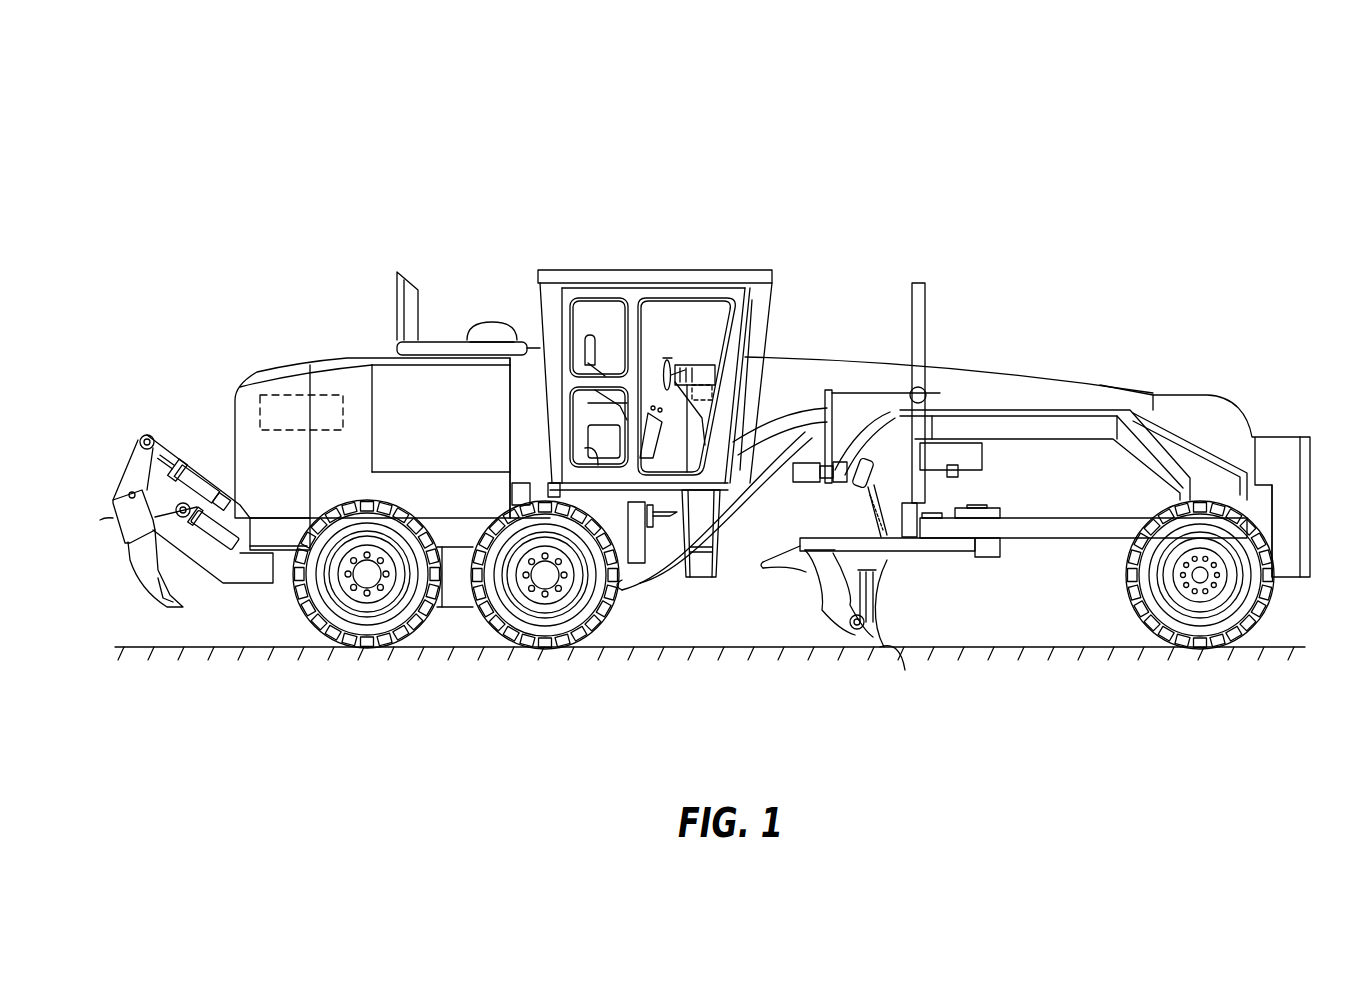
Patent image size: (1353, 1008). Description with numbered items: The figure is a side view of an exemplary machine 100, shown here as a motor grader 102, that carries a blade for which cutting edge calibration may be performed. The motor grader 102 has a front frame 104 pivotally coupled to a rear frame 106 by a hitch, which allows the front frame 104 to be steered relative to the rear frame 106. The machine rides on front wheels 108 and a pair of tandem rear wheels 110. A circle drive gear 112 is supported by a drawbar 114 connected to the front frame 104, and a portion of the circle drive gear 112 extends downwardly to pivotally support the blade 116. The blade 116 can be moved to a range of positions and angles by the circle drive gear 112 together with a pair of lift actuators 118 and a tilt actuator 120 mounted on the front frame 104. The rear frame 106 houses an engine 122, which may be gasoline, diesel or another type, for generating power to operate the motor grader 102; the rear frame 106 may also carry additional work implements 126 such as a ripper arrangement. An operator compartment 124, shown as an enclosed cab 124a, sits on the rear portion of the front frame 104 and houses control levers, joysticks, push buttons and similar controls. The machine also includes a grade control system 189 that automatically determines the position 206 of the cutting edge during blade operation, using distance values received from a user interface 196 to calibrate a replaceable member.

The machine 100 is at (702, 411).
The motor grader 102 is at (702, 479).
The front frame 104 is at (1235, 405).
The rear frame 106 is at (458, 602).
The front wheels 108 is at (1270, 610).
The tandem rear wheels 110 is at (357, 650).
The circle drive gear 112 is at (948, 552).
The drawbar 114 is at (1025, 523).
The blade 116 is at (868, 642).
The lift actuators 118 is at (913, 485).
The tilt actuator 120 is at (797, 567).
The engine 122 is at (282, 393).
The operator compartment 124 is at (714, 355).
The cab 124a is at (750, 337).
The work implements 126 is at (112, 530).
The grade control system 189 is at (707, 382).
The user interface 196 is at (687, 368).
The position 206 is at (880, 648).